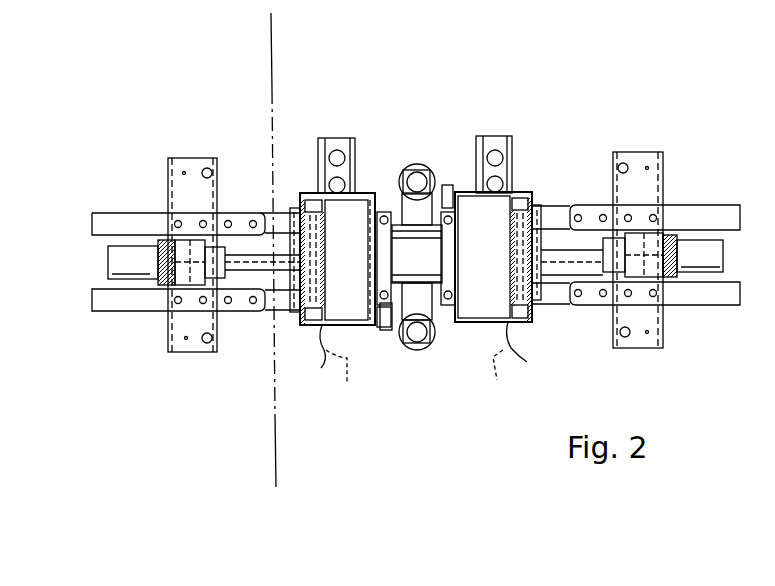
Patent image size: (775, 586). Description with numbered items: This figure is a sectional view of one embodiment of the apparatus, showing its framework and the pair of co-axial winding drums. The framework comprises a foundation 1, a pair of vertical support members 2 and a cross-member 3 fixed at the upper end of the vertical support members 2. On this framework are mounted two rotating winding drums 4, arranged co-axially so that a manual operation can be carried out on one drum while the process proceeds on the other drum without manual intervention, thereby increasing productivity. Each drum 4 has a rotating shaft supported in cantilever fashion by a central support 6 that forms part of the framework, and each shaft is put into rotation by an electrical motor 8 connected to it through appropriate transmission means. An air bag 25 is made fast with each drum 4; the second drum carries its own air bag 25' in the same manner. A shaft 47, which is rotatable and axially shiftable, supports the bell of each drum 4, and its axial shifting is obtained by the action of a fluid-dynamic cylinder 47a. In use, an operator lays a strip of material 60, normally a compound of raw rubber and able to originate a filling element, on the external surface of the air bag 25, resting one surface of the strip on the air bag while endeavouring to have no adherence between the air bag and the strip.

The foundation 1 is at (80, 320).
The vertical support member 2 is at (170, 286).
The cross-member 3 is at (266, 54).
The rotating winding drum 4 is at (362, 180).
The central support 6 is at (405, 253).
The electrical motor 8 is at (432, 162).
The air bag 25 is at (342, 377).
The cable 25' is at (487, 375).
The shaft 47 is at (277, 258).
The fluid-dynamic cylinder 47a is at (135, 258).
The strip of material 60 is at (423, 353).